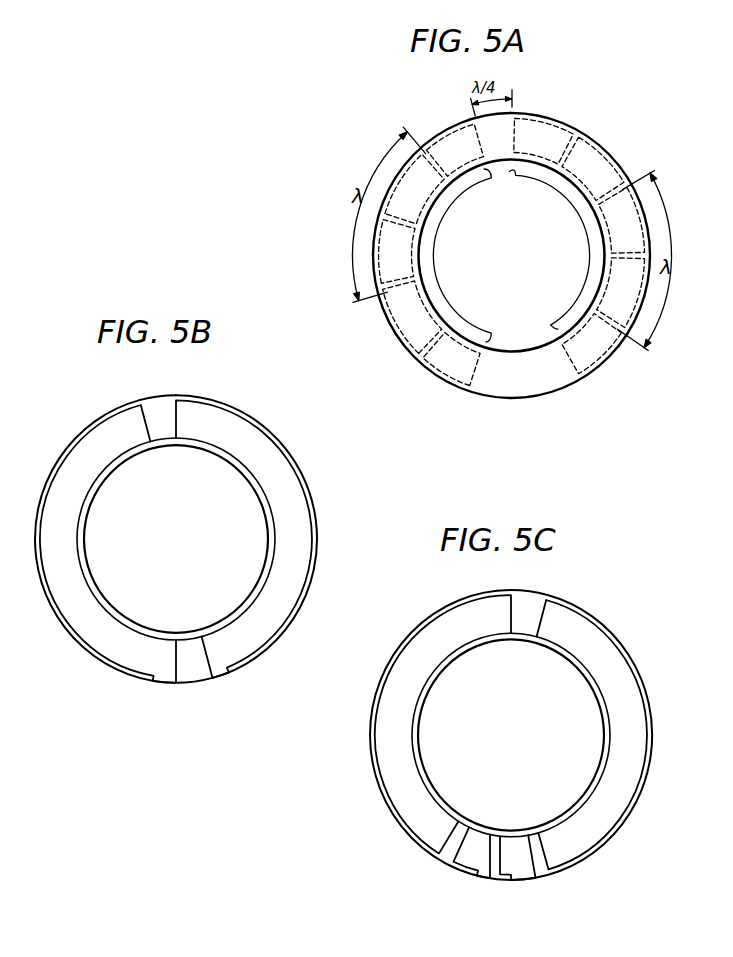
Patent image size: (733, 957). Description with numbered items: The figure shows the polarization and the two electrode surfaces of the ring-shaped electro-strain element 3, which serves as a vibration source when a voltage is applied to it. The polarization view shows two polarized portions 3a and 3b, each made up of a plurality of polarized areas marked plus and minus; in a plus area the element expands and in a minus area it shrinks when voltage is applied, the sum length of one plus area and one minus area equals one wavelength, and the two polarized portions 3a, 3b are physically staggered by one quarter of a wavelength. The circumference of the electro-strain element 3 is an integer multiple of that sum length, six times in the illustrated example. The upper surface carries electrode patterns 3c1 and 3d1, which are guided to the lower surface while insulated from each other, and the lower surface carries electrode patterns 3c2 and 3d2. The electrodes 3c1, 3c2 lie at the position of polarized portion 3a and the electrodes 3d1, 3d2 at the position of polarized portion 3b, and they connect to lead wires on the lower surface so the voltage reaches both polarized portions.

In FIG. 5A, the electro-strain element 3 is at (619, 154).
In FIG. 5B, the electro-strain element 3 is at (236, 404).
In FIG. 5C, the electro-strain element 3 is at (601, 616).
In FIG. 5A, the polarized portion 3a is at (581, 274).
In FIG. 5A, the polarized portion 3b is at (440, 240).
In FIG. 5B, the electrode pattern 3c1 is at (280, 610).
In FIG. 5C, the electrode pattern 3c1 is at (425, 823).
In FIG. 5B, the electrode pattern 3c2 is at (297, 567).
In FIG. 5C, the electrode pattern 3c2 is at (395, 785).
In FIG. 5B, the electrode pattern 3d1 is at (120, 655).
In FIG. 5C, the electrode pattern 3d1 is at (577, 843).
In FIG. 5B, the electrode pattern 3d2 is at (90, 633).
In FIG. 5C, the electrode pattern 3d2 is at (623, 793).